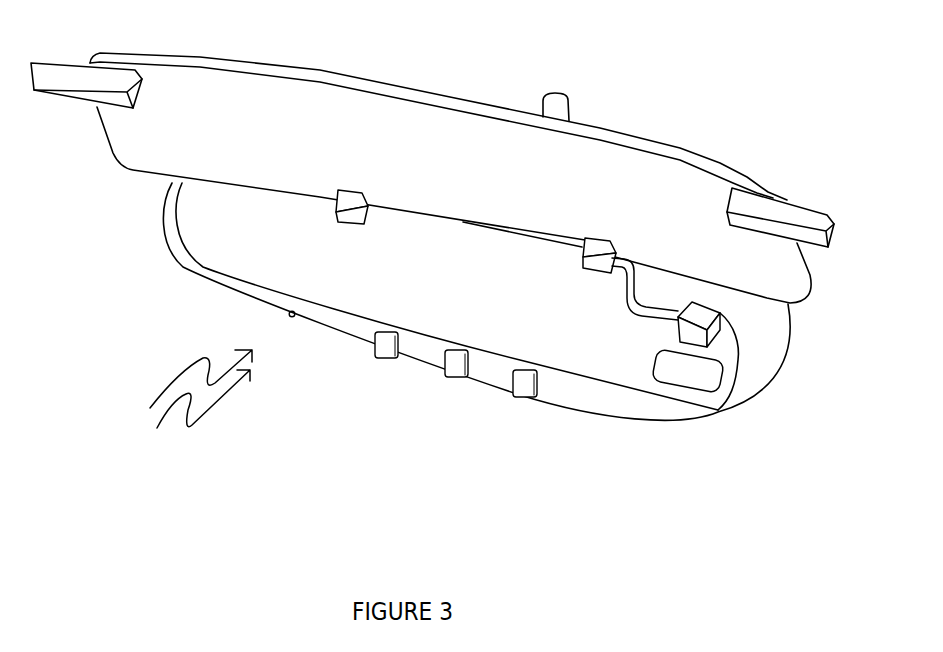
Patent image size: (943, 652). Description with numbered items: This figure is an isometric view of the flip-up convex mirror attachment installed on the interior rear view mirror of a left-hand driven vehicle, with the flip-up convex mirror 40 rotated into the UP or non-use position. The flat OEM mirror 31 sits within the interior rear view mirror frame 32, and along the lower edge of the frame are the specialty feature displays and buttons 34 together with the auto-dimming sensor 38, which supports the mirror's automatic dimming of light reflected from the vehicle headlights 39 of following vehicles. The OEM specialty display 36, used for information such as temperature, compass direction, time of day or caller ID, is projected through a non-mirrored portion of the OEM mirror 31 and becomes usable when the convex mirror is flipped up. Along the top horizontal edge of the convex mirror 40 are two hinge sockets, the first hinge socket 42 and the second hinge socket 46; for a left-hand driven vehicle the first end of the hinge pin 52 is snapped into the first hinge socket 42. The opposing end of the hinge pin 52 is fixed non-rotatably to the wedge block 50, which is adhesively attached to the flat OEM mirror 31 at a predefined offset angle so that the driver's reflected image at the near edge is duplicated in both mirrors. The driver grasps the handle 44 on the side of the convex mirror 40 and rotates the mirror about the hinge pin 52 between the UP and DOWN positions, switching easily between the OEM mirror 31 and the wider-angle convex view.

The flip-up convex mirror 40 is at (175, 145).
The handle 44 is at (795, 227).
The interior rear view mirror frame 32 is at (613, 407).
The flat OEM mirror 31 is at (233, 238).
The specialty feature displays and buttons 34 is at (527, 393).
The second hinge socket 46 is at (350, 203).
The first hinge socket 42 is at (598, 250).
The hinge pin 52 is at (663, 315).
The wedge block 50 is at (705, 330).
The OEM specialty display 36 is at (712, 393).
The auto-dimming sensor 38 is at (289, 316).
The vehicle headlights 39 is at (157, 430).